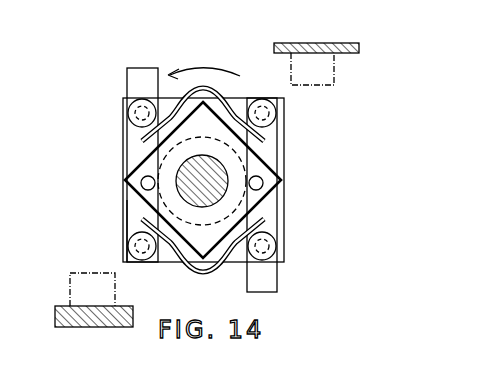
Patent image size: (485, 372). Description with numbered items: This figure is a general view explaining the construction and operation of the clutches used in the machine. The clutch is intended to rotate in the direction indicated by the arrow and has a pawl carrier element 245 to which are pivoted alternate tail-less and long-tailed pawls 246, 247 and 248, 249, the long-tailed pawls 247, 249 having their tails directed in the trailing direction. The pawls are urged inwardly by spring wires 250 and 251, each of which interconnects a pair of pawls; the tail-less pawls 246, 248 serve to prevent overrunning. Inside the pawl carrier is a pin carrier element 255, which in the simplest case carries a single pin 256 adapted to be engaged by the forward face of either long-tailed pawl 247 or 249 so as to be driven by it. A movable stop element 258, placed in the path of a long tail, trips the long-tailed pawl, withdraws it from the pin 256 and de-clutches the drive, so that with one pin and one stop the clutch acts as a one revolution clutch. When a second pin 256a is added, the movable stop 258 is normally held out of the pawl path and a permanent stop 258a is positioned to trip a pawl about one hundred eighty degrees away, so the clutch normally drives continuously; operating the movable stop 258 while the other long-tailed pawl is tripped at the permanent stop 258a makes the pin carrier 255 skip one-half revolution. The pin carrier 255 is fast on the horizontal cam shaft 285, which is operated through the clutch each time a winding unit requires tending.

The pawl carrier element 245 is at (266, 183).
The tail-less pawl 246 is at (270, 135).
The long-tailed pawl 247 is at (136, 83).
The tail-less pawl 248 is at (136, 213).
The long-tailed pawl 249 is at (267, 227).
The spring wire 250 is at (208, 89).
The spring wire 251 is at (198, 272).
The pin carrier element 255 is at (250, 165).
The pin 256 is at (141, 183).
The second pin 256a is at (281, 179).
The movable stop element 258 is at (333, 74).
The permanent stop 258a is at (76, 293).
The horizontal cam shaft 285 is at (213, 193).